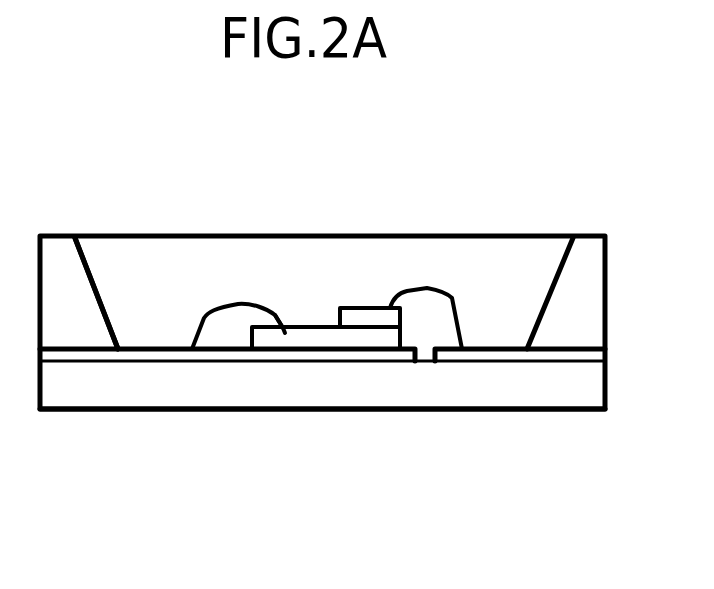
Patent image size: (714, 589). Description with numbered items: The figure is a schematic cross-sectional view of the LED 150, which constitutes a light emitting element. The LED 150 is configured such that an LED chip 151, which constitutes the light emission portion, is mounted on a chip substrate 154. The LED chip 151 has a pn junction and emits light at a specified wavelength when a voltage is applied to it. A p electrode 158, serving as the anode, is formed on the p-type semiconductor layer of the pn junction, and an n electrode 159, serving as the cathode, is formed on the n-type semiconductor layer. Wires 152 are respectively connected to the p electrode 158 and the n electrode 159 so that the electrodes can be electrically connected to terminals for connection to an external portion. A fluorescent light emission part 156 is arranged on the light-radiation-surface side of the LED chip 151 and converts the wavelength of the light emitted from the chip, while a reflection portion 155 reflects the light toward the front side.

The LED 150 is at (293, 420).
The LED chip 151 is at (315, 335).
The wires 152 is at (203, 307).
The chip substrate 154 is at (212, 383).
The reflection portion 155 is at (89, 256).
The fluorescent light emission part 156 is at (145, 282).
The p electrode 158 is at (355, 313).
The n electrode 159 is at (282, 327).